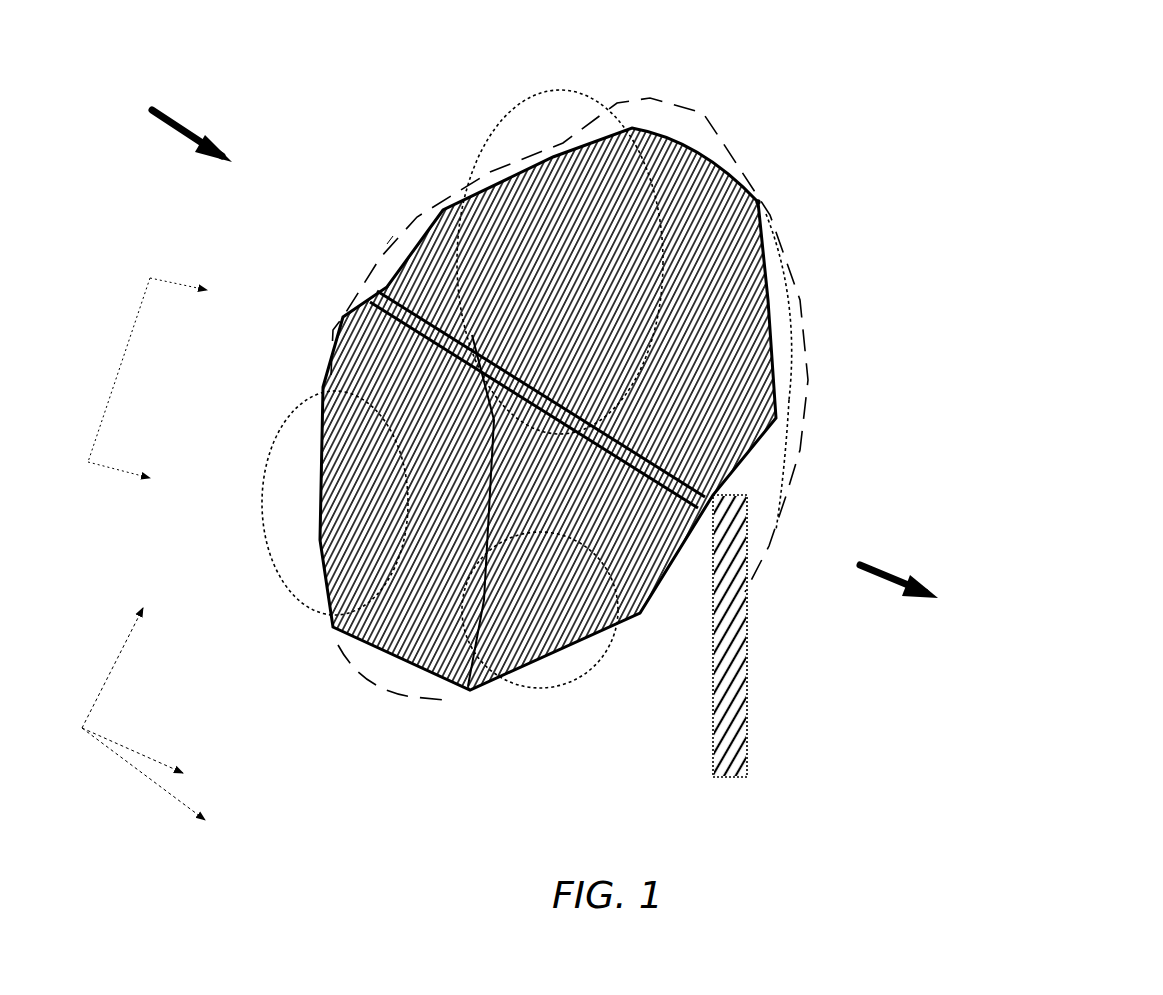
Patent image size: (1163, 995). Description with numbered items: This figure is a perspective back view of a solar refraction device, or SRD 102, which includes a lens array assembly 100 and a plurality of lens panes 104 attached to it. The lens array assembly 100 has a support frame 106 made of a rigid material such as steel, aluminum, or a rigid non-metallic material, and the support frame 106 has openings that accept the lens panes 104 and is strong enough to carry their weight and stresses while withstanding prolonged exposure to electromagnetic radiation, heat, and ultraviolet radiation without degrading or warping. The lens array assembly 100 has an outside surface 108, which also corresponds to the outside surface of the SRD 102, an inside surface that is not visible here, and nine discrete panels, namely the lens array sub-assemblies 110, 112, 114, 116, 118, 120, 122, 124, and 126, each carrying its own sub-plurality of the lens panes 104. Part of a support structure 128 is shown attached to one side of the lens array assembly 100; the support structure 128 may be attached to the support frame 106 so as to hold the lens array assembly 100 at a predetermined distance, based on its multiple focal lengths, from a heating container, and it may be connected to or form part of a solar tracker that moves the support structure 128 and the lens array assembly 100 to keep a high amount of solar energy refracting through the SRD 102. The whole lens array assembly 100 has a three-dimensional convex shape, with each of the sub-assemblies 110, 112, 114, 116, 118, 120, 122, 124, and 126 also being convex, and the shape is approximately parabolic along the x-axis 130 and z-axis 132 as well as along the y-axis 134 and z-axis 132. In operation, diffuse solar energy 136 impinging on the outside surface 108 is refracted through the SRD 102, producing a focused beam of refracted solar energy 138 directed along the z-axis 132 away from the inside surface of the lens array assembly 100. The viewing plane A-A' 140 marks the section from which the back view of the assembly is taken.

The lens array assembly 100 is at (570, 375).
The solar refraction device 102 is at (615, 431).
The lens panes 104 is at (487, 177).
The support frame 106 is at (465, 700).
The outside surface 108 is at (745, 572).
The lens array sub-assembly 110 is at (663, 97).
The lens array sub-assembly 112 is at (788, 490).
The lens array sub-assembly 114 is at (387, 240).
The lens array sub-assembly 116 is at (352, 705).
The lens array sub-assembly 118 is at (780, 223).
The lens array sub-assembly 120 is at (551, 692).
The lens array sub-assembly 122 is at (280, 603).
The lens array sub-assembly 124 is at (540, 97).
The lens array sub-assembly 126 is at (795, 348).
The support structure 128 is at (235, 360).
The x-axis 130 is at (178, 759).
The z-axis 132 is at (181, 787).
The y-axis 134 is at (130, 654).
The diffuse solar energy 136 is at (182, 100).
The focused beam of refracted solar energy 138 is at (900, 575).
The viewing plane A-A' 140 is at (165, 389).